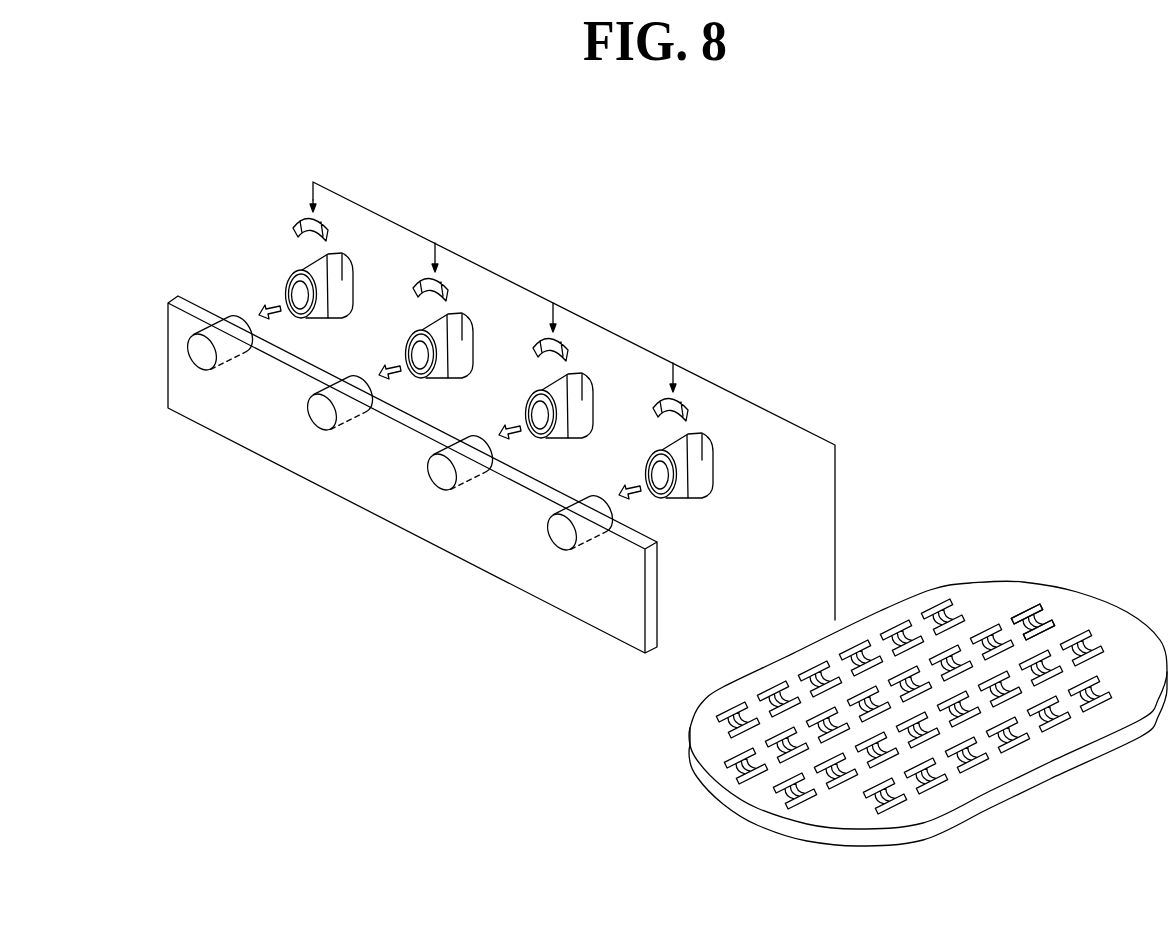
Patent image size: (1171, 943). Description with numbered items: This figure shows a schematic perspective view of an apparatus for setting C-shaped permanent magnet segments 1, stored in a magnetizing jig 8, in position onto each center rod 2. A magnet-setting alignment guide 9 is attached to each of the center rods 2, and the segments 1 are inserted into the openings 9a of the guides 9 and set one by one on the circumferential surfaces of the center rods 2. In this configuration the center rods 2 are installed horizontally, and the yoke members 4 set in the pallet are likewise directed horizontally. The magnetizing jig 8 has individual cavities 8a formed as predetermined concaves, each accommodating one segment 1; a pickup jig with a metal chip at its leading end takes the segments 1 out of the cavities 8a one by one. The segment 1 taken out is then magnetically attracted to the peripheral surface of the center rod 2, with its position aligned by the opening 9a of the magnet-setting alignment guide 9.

The C-shaped permanent magnet segment 1 is at (304, 221).
The center rod 2 is at (308, 319).
The yoke member 4 is at (233, 315).
The magnetizing jig 8 is at (1128, 648).
The individual cavity 8a is at (1053, 616).
The magnet-setting alignment guide 9 is at (320, 254).
The opening 9a is at (345, 268).